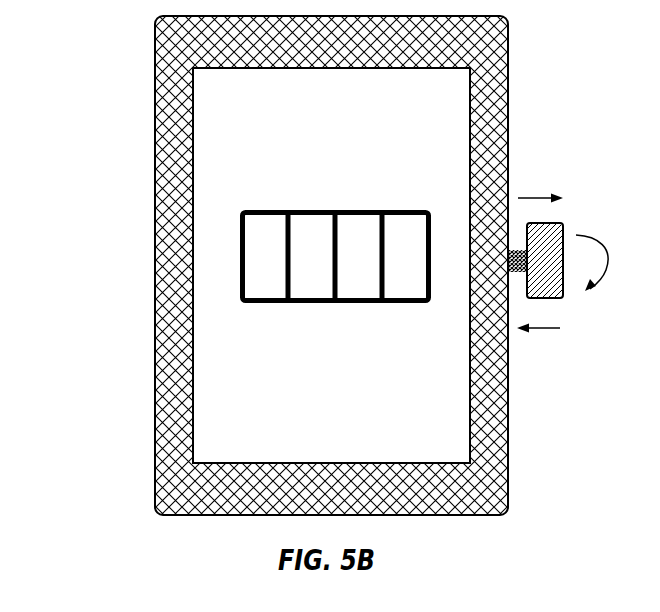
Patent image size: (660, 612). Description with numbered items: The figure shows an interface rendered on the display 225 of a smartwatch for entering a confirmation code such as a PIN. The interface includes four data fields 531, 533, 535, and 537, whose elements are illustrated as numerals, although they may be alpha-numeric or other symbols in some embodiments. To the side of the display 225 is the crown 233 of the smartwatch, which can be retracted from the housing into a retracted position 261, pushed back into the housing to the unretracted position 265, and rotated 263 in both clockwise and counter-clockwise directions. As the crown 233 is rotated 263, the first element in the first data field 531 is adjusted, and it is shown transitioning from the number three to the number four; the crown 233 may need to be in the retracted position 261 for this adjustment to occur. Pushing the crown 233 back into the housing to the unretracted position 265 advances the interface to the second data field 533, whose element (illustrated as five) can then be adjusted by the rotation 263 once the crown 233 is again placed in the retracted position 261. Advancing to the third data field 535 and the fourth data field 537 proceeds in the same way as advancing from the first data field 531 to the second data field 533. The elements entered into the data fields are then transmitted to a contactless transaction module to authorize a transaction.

The display 225 is at (238, 127).
The first data field 531 is at (249, 217).
The second data field 533 is at (307, 222).
The third data field 535 is at (355, 223).
The fourth data field 537 is at (405, 223).
The crown 233 is at (538, 238).
The retracted position 261 is at (540, 185).
The rotation 263 is at (617, 263).
The unretracted position 265 is at (538, 345).